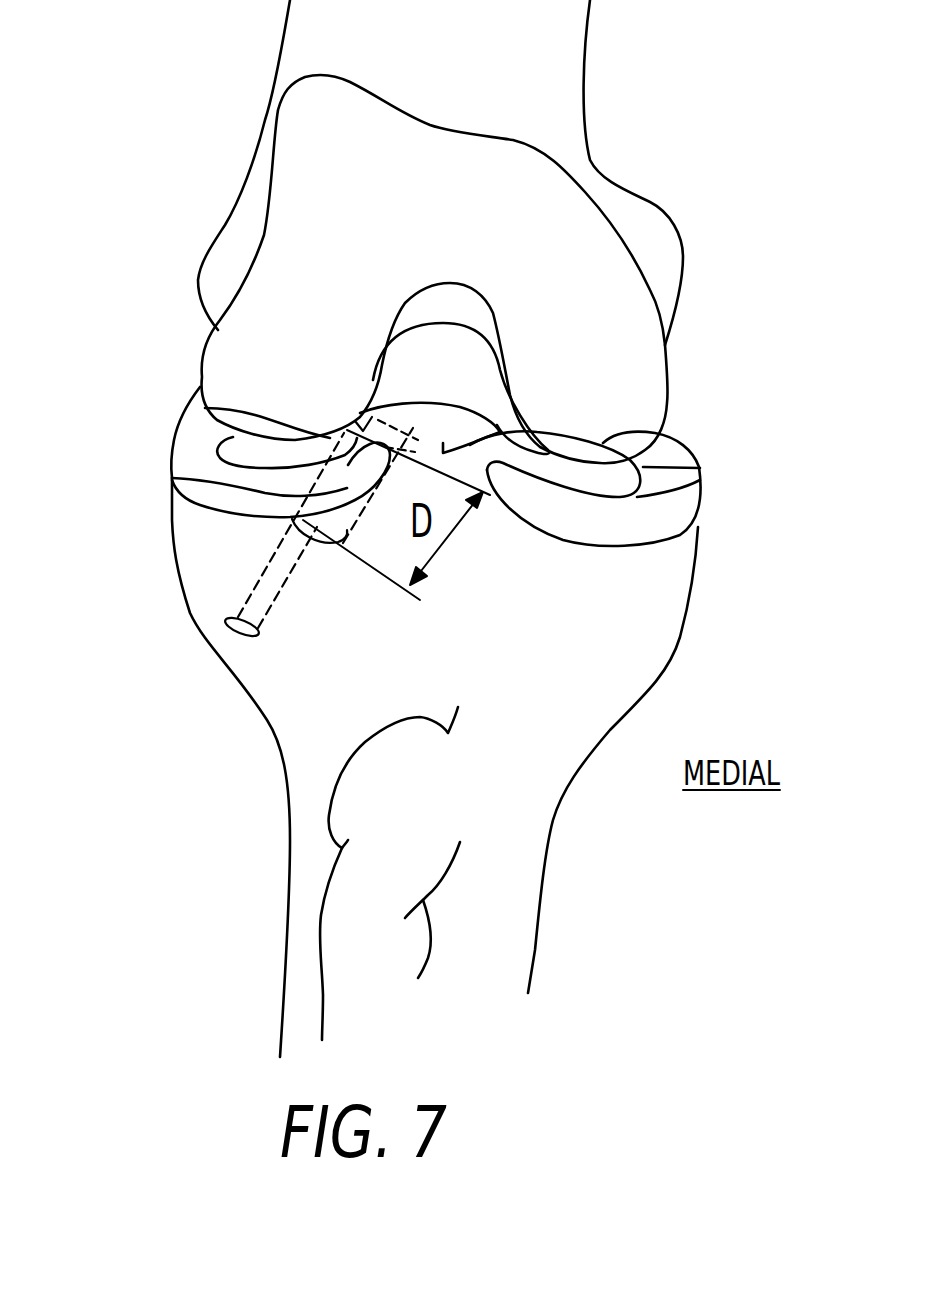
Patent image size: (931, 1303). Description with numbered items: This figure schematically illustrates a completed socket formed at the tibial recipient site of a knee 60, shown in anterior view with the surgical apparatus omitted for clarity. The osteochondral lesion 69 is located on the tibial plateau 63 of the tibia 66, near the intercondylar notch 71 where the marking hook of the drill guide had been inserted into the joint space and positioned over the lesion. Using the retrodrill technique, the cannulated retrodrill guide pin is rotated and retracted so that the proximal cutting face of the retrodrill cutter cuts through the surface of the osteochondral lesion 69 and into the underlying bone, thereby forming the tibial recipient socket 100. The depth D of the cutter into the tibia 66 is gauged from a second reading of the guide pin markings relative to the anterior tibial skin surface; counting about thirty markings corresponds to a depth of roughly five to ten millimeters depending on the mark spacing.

The knee 60 is at (240, 222).
The intercondylar notch 71 is at (445, 373).
The osteochondral lesion 69 is at (205, 408).
The tibial plateau 63 is at (462, 430).
The tibia 66 is at (667, 572).
The tibial recipient socket 100 is at (172, 478).